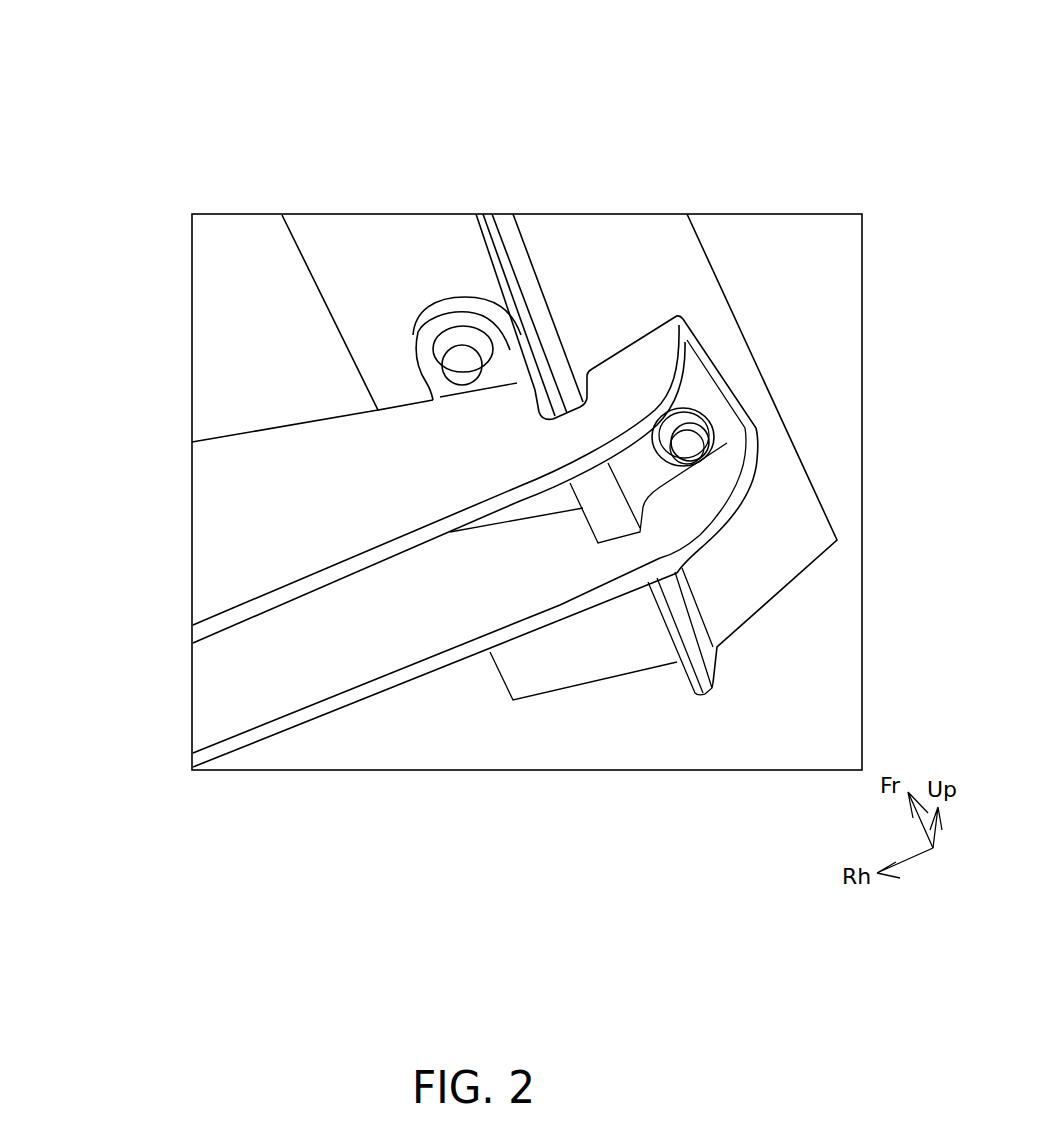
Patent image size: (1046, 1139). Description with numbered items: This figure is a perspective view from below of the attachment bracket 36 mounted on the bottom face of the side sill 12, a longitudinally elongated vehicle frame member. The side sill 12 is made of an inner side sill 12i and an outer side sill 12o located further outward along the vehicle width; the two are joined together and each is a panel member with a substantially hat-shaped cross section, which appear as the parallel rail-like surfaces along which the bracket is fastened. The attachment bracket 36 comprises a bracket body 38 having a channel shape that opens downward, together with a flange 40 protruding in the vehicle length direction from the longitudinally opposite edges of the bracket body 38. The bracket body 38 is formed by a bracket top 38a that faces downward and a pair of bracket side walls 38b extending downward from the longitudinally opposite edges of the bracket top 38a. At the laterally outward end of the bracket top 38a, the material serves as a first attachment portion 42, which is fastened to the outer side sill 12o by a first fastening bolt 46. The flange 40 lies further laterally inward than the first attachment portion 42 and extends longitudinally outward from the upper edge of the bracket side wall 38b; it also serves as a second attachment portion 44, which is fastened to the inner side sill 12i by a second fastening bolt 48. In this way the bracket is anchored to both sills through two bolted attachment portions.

The side sill 12 is at (565, 347).
The inner side sill 12i is at (457, 242).
The outer side sill 12o is at (593, 240).
The attachment bracket 36 is at (365, 608).
The bracket body 38 is at (365, 608).
The bracket top 38a is at (558, 497).
The bracket side wall 38b is at (252, 525).
The flange 40 is at (427, 360).
The first attachment portion 42 is at (703, 383).
The second attachment portion 44 is at (387, 249).
The first fastening bolt 46 is at (693, 445).
The second fastening bolt 48 is at (453, 350).